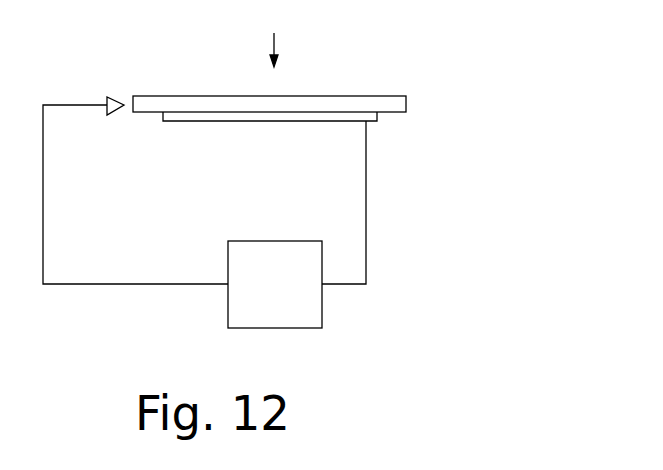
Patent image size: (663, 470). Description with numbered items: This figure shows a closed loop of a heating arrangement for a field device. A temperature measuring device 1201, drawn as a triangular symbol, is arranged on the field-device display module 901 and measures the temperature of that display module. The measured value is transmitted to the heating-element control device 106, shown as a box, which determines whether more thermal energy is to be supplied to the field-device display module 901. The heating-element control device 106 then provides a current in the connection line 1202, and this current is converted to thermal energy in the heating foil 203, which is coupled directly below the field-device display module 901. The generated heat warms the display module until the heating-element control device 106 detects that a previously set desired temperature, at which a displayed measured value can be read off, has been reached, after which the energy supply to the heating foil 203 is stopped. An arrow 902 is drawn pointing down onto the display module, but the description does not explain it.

The temperature measuring device 1201 is at (122, 88).
The incident light / force arrow 902 is at (278, 43).
The field-device display module 901 is at (397, 90).
The heating foil 203 is at (377, 125).
The connection line 1202 is at (390, 218).
The heating-element control device 106 is at (323, 313).